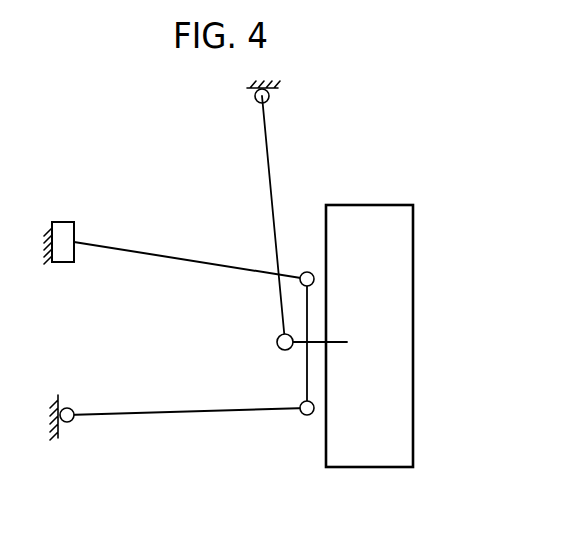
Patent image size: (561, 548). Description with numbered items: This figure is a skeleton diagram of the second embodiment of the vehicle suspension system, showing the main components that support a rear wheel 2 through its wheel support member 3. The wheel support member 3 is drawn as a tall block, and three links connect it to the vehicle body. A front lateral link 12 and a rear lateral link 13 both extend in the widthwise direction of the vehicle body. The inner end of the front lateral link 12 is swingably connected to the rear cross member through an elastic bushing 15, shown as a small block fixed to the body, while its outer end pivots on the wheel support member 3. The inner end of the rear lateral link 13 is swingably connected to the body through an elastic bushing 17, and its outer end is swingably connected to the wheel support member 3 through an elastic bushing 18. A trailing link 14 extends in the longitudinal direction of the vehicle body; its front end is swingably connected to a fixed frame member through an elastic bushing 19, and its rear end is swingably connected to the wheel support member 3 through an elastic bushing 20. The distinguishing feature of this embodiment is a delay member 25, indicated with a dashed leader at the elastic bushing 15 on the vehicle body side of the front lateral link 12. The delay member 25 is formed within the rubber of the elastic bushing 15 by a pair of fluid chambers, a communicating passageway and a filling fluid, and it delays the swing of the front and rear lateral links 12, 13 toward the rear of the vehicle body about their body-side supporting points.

The rear wheel 2 is at (413, 233).
The wheel support member 3 is at (307, 372).
The front lateral link 12 is at (172, 257).
The rear lateral link 13 is at (190, 415).
The trailing link 14 is at (270, 165).
The elastic bushing 15 is at (78, 223).
The elastic bushing 17 is at (70, 423).
The elastic bushing 18 is at (301, 416).
The elastic bushing 19 is at (270, 96).
The elastic bushing 20 is at (277, 342).
The delay member 25 is at (62, 256).